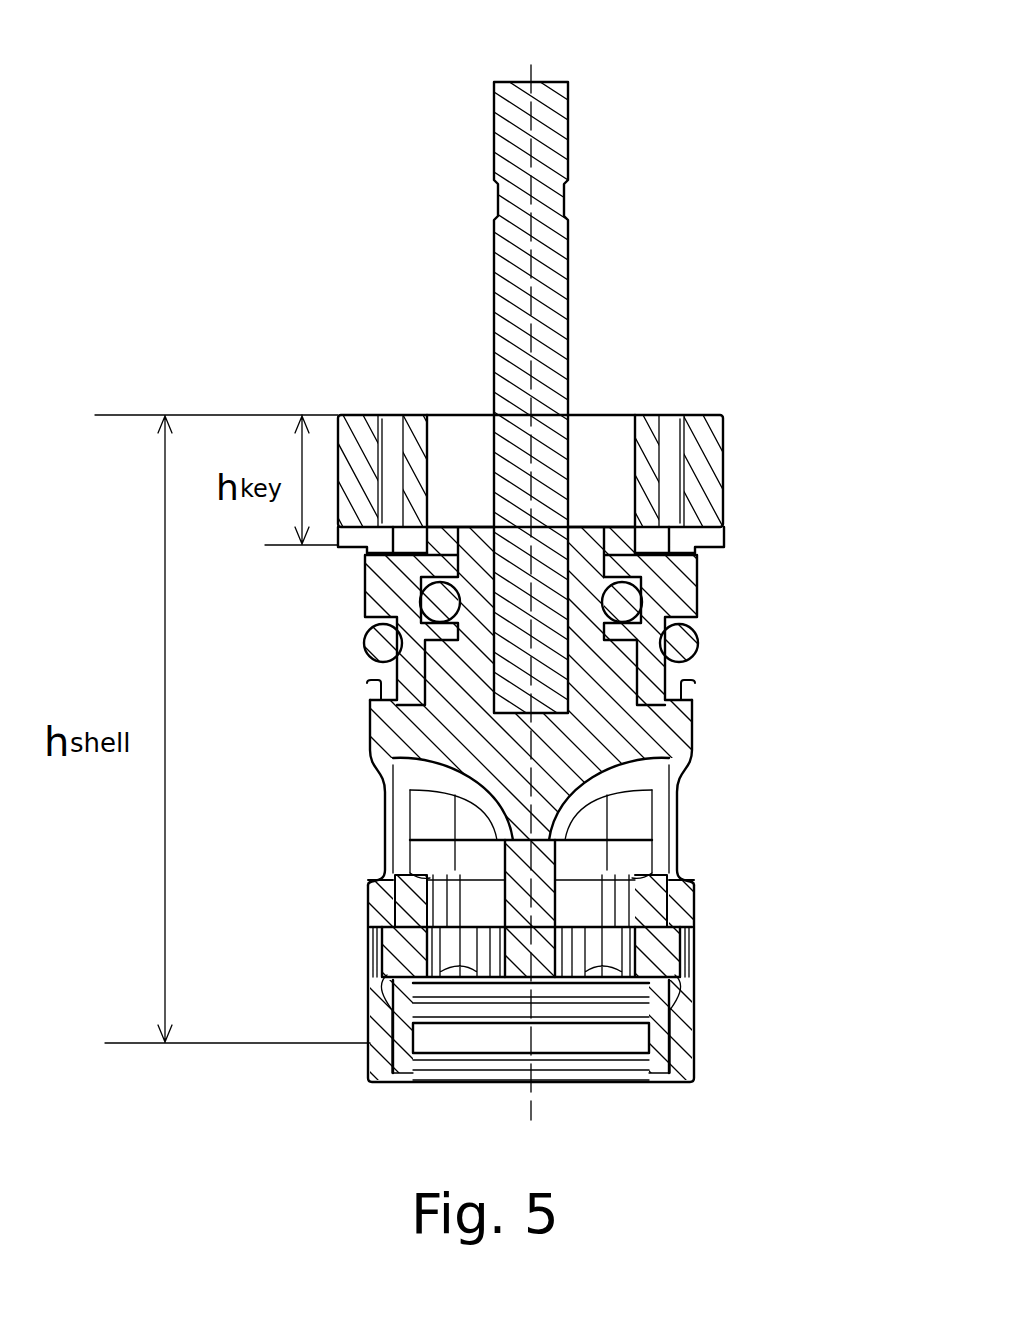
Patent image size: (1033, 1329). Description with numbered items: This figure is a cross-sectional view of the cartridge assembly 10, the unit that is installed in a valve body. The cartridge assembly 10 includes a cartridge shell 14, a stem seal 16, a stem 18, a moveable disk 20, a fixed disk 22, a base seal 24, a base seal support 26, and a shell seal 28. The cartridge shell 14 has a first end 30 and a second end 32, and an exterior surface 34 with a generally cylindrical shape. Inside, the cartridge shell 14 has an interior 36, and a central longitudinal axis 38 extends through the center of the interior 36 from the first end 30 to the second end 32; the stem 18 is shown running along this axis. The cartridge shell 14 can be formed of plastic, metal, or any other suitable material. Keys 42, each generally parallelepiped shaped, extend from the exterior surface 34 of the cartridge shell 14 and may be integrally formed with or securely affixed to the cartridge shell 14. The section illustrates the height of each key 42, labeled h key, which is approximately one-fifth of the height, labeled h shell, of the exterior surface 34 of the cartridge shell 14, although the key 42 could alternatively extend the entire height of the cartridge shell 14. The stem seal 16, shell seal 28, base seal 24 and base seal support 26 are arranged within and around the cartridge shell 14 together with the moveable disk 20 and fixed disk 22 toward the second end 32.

The cartridge assembly 10 is at (258, 268).
The cartridge shell 14 is at (712, 594).
The stem seal 16 is at (420, 607).
The stem 18 is at (372, 738).
The moveable disk 20 is at (368, 898).
The fixed disk 22 is at (372, 962).
The base seal 24 is at (370, 1070).
The base seal support 26 is at (418, 1040).
The shell seal 28 is at (362, 647).
The first end 30 is at (753, 424).
The second end 32 is at (712, 1049).
The exterior surface 34 is at (696, 722).
The interior 36 is at (588, 440).
The central longitudinal axis 38 is at (531, 72).
The key 42 is at (725, 472).